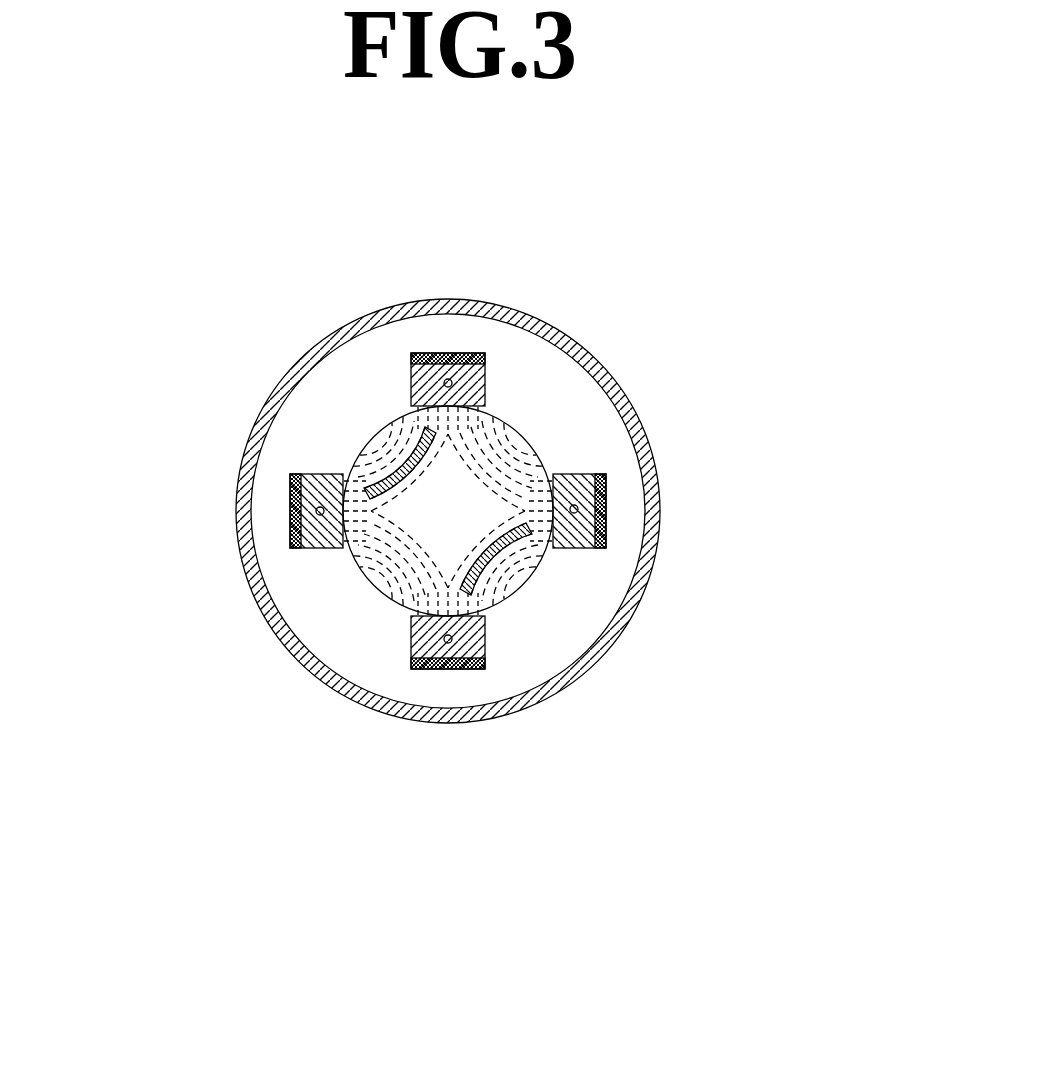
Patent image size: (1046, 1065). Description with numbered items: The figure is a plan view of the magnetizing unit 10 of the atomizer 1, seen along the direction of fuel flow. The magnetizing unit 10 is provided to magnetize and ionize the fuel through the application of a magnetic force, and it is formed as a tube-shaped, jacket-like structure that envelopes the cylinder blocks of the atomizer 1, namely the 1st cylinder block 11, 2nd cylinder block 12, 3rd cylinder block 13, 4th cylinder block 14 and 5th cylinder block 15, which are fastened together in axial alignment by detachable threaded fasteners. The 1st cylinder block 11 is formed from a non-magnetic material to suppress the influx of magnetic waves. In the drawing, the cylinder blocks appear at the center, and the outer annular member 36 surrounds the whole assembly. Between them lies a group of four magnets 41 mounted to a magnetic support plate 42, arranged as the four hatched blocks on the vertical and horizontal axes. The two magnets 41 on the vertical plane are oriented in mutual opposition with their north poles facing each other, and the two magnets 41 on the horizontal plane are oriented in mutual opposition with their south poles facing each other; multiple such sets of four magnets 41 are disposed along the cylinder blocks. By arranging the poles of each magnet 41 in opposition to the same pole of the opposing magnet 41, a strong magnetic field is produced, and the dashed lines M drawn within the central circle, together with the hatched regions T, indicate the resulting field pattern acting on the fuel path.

The atomizer 1 is at (456, 739).
The magnetizing unit 10 is at (523, 390).
The yoke 36 is at (647, 588).
The magnet 41 is at (410, 377).
The magnetic support plate 42 is at (578, 508).
The 1st cylinder block 11 is at (479, 493).
The 2nd cylinder block 12 is at (479, 493).
The 3rd cylinder block 13 is at (479, 493).
The 4th cylinder block 14 is at (479, 493).
The 5th cylinder block 15 is at (479, 493).
The magnetic tooth T is at (398, 452).
The magnetic flux M is at (548, 443).